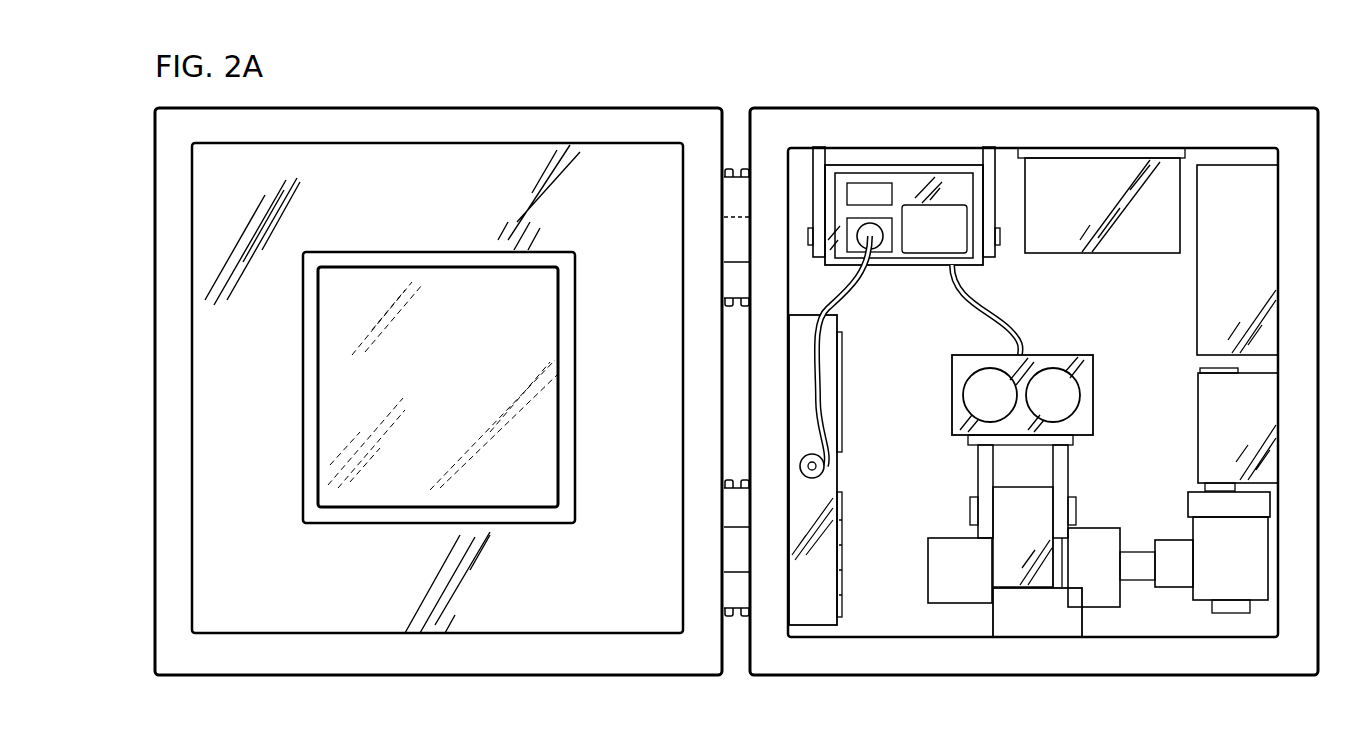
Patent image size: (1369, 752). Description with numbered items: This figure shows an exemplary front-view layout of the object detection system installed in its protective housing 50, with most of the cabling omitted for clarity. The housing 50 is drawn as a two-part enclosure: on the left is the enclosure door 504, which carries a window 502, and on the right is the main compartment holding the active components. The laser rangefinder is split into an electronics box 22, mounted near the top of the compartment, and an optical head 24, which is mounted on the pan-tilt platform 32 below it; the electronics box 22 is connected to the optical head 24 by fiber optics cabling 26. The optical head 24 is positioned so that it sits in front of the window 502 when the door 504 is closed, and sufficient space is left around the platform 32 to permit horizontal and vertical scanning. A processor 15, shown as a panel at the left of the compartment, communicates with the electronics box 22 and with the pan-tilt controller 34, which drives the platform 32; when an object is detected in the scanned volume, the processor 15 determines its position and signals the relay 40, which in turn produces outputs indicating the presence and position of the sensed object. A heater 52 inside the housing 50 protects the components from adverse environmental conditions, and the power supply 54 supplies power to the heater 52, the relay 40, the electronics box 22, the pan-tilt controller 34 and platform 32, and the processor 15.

The housing 50 is at (760, 106).
The enclosure door 504 is at (320, 185).
The window 502 is at (372, 483).
The processor 15 is at (809, 592).
The electronics box portion 22 is at (896, 181).
The fiber optics cabling 26 is at (975, 313).
The optical head portion 24 is at (963, 393).
The pan-tilt platform 32 is at (1023, 529).
The heater 52 is at (1099, 530).
The relay 40 is at (1077, 183).
The power supply 54 is at (1250, 261).
The controller portion 34 is at (1237, 414).